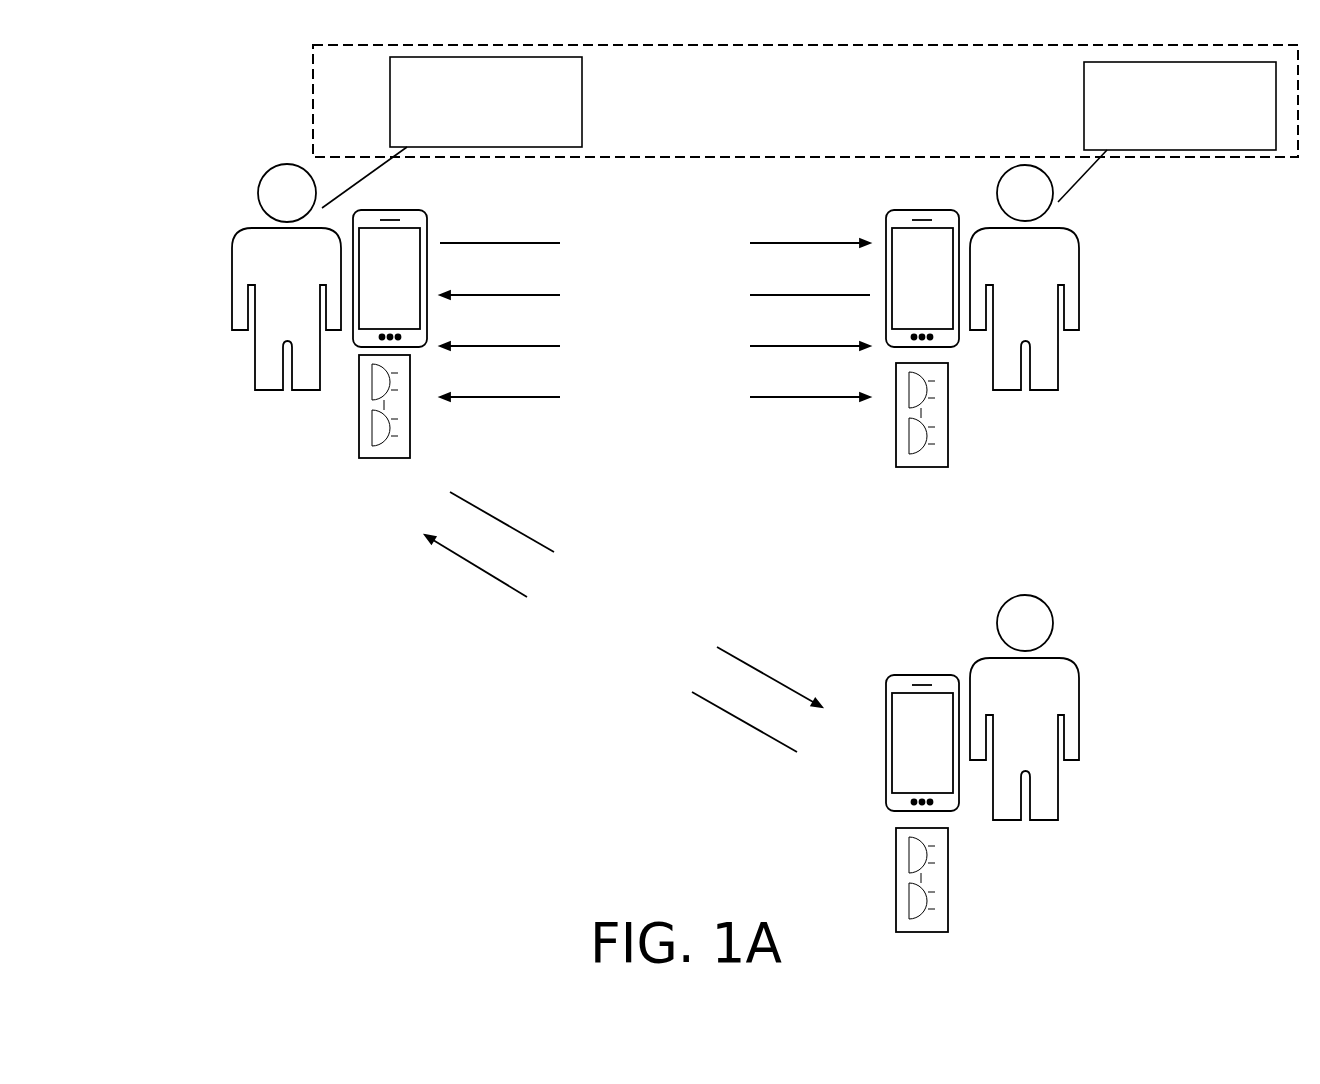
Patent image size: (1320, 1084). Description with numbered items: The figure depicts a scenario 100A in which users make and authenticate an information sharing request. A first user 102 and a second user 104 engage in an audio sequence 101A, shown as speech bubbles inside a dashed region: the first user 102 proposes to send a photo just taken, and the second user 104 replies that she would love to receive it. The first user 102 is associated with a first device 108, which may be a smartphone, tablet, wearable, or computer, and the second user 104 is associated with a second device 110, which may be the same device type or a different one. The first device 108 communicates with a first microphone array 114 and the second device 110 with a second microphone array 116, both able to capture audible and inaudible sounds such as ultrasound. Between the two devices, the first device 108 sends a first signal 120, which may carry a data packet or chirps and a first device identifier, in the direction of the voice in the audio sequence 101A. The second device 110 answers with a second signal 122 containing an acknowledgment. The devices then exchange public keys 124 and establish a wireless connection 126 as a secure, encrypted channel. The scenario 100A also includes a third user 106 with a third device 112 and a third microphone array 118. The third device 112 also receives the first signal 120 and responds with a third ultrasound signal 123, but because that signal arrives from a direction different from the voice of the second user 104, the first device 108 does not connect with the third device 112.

The scenario 100A is at (158, 62).
The audio sequence 101A is at (843, 80).
The first user 102 is at (267, 272).
The second user 104 is at (1005, 272).
The third user 106 is at (1005, 702).
The first device 108 is at (370, 268).
The second device 110 is at (902, 270).
The third device 112 is at (902, 732).
The first microphone array 114 is at (359, 432).
The second microphone array 116 is at (948, 440).
The third microphone array 118 is at (948, 913).
The first signal 120 is at (626, 619).
The second signal 122 is at (641, 311).
The third ultrasound signal 123 is at (626, 670).
The public keys 124 is at (641, 363).
The wireless connection 126 is at (641, 415).